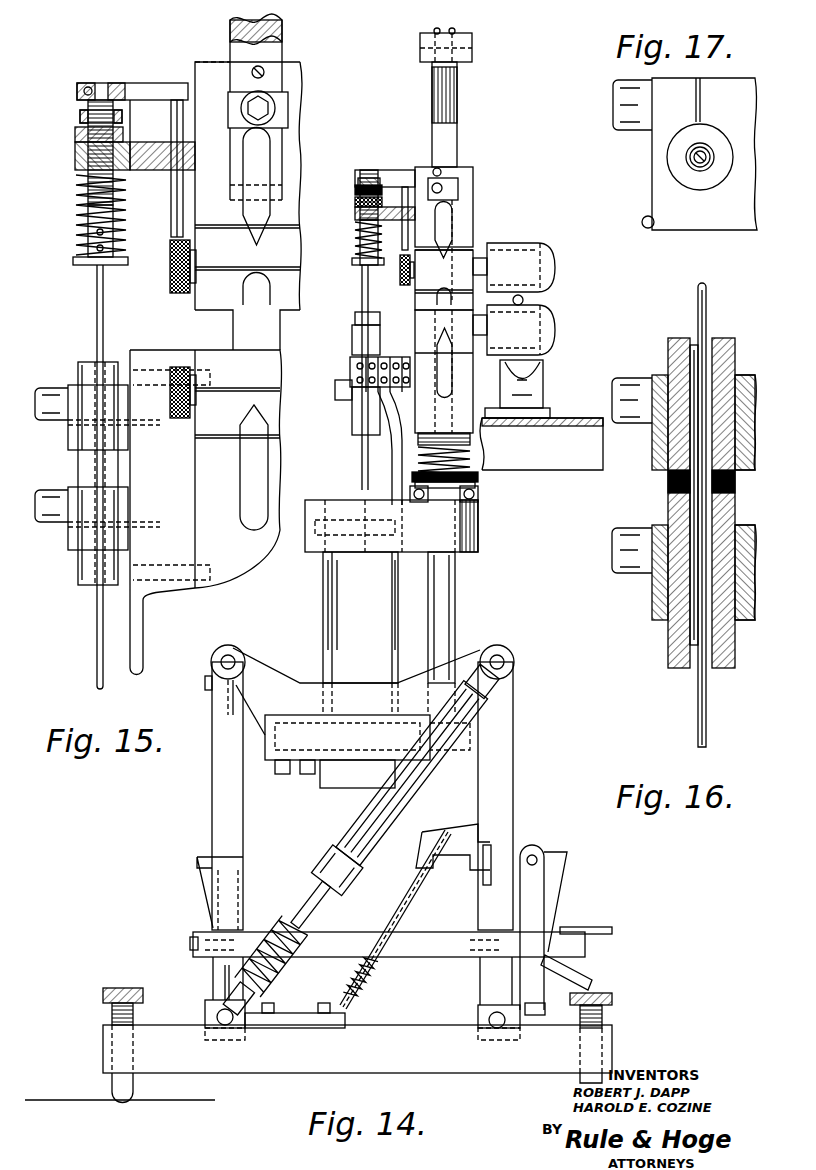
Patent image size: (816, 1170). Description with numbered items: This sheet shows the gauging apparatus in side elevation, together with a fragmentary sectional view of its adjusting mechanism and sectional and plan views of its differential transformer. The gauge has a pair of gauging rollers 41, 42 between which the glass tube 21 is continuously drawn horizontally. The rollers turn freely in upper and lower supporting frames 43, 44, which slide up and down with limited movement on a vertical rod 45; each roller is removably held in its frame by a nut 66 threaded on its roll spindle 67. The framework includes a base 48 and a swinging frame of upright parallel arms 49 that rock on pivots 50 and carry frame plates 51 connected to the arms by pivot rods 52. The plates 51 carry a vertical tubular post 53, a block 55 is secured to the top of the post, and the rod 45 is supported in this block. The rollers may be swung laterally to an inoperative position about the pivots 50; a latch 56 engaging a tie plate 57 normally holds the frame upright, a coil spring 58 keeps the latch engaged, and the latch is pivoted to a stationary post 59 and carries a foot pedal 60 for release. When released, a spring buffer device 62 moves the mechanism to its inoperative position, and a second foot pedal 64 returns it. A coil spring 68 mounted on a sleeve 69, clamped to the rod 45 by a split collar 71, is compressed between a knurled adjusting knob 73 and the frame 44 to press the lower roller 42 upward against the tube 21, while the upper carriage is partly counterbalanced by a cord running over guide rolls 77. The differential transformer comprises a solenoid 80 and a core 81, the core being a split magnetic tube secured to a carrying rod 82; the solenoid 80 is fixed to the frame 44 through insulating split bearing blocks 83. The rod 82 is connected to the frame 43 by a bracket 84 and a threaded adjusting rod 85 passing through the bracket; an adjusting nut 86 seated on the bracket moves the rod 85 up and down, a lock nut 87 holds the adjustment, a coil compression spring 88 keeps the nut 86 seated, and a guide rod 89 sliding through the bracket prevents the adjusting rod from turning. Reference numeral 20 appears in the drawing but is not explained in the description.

In FIG. 14, the probe assembly 20 is at (512, 226).
In FIG. 14, the glass tube 21 is at (524, 300).
In FIG. 14, the gauging roller 41 is at (535, 246).
In FIG. 14, the gauging roller 42 is at (542, 322).
In FIG. 15, the upper supporting frame 43 is at (301, 132).
In FIG. 14, the upper supporting frame 43 is at (470, 212).
In FIG. 15, the lower supporting frame 44 is at (232, 507).
In FIG. 14, the lower supporting frame 44 is at (464, 380).
In FIG. 15, the vertical rod 45 is at (283, 30).
In FIG. 14, the vertical rod 45 is at (446, 92).
In FIG. 14, the base 48 is at (395, 1025).
In FIG. 14, the upright parallel arms 49 is at (215, 796).
In FIG. 14, the pivots 50 is at (214, 1017).
In FIG. 14, the frame plates 51 is at (278, 680).
In FIG. 14, the pivot rods 52 is at (233, 655).
In FIG. 14, the vertical tubular post 53 is at (335, 586).
In FIG. 14, the block 55 is at (470, 528).
In FIG. 14, the latch 56 is at (452, 838).
In FIG. 14, the tie plate 57 is at (482, 884).
In FIG. 14, the coil spring 58 is at (362, 992).
In FIG. 14, the stationary post 59 is at (541, 851).
In FIG. 14, the foot pedal 60 is at (592, 978).
In FIG. 14, the spring buffer device 62 is at (318, 905).
In FIG. 14, the foot pedal 64 is at (598, 926).
In FIG. 15, the nuts 66 is at (170, 284).
In FIG. 14, the nuts 66 is at (405, 286).
In FIG. 14, the roll spindles 67 is at (481, 258).
In FIG. 14, the coil spring 68 is at (472, 456).
In FIG. 14, the sleeve 69 is at (476, 485).
In FIG. 14, the split collar 71 is at (478, 495).
In FIG. 14, the knurled adjusting knob 73 is at (480, 476).
In FIG. 14, the guide rolls 77 is at (420, 34).
In FIG. 15, the solenoid 80 is at (82, 470).
In FIG. 14, the solenoid 80 is at (358, 322).
In FIG. 17, the solenoid 80 is at (676, 160).
In FIG. 16, the solenoid 80 is at (668, 488).
In FIG. 17, the core 81 is at (704, 148).
In FIG. 16, the core 81 is at (694, 345).
In FIG. 15, the carrying rod 82 is at (97, 320).
In FIG. 14, the carrying rod 82 is at (362, 288).
In FIG. 17, the carrying rod 82 is at (708, 158).
In FIG. 16, the carrying rod 82 is at (707, 300).
In FIG. 15, the split bearing blocks 83 is at (70, 436).
In FIG. 14, the split bearing blocks 83 is at (338, 412).
In FIG. 17, the split bearing blocks 83 is at (660, 193).
In FIG. 16, the split bearing blocks 83 is at (657, 372).
In FIG. 15, the bracket 84 is at (156, 171).
In FIG. 14, the bracket 84 is at (362, 213).
In FIG. 15, the adjusting rod 85 is at (75, 158).
In FIG. 14, the adjusting rod 85 is at (362, 184).
In FIG. 15, the adjusting nut 86 is at (75, 134).
In FIG. 14, the adjusting nut 86 is at (356, 203).
In FIG. 15, the lock nut 87 is at (82, 116).
In FIG. 14, the lock nut 87 is at (356, 192).
In FIG. 15, the coil compression spring 88 is at (76, 212).
In FIG. 14, the coil compression spring 88 is at (355, 246).
In FIG. 15, the guide rod 89 is at (174, 124).
In FIG. 14, the guide rod 89 is at (404, 243).